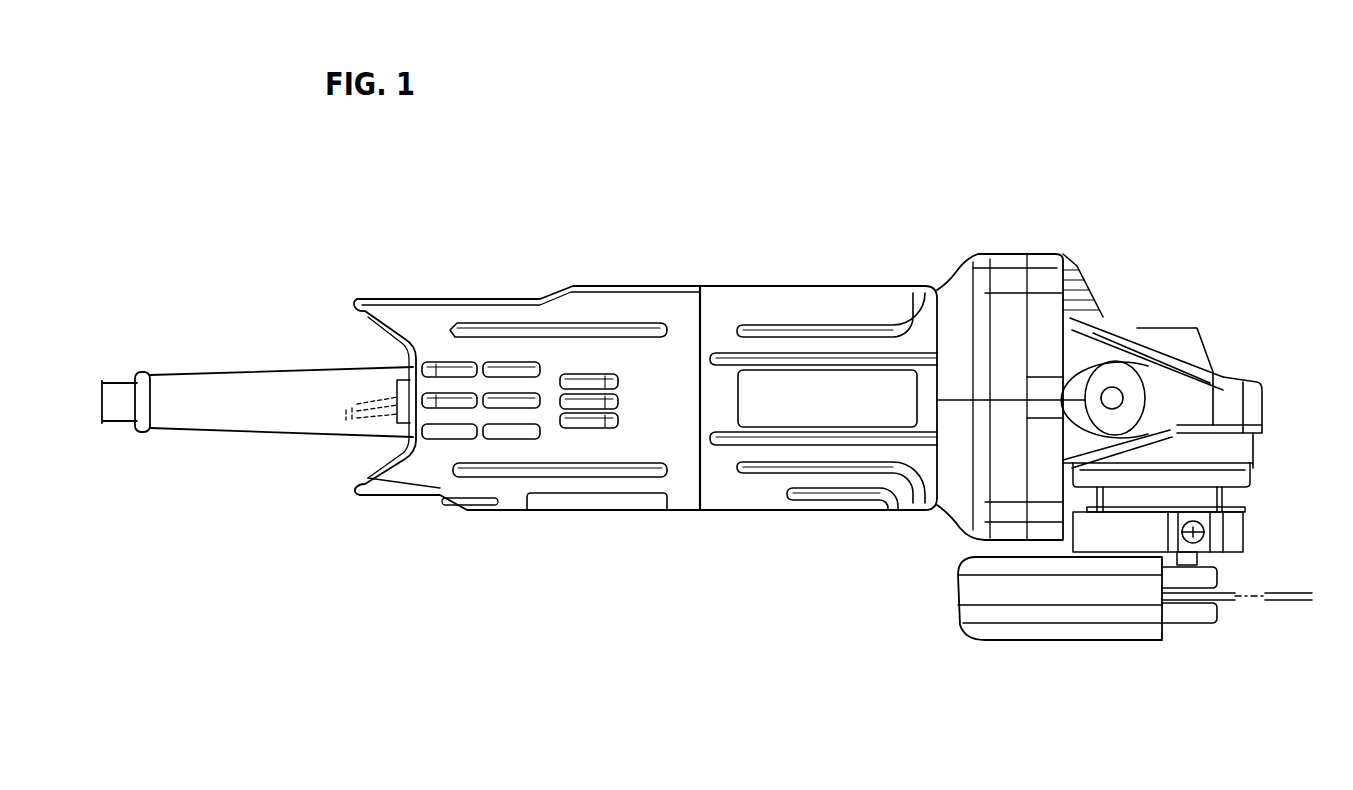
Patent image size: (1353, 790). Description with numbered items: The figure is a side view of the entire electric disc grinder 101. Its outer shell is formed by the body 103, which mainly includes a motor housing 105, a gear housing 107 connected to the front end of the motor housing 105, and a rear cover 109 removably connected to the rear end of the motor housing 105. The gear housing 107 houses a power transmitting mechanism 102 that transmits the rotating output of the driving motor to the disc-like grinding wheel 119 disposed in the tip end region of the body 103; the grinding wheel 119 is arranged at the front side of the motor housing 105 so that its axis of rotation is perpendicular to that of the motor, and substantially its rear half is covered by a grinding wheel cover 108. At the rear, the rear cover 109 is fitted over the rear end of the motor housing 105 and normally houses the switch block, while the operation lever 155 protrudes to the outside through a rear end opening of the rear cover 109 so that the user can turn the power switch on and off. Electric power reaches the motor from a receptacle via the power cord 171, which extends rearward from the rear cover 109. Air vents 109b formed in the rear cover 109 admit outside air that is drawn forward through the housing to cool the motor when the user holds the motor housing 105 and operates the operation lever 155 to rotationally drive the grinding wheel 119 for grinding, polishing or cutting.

The electric disc grinder 101 is at (1083, 198).
The power transmitting mechanism 102 is at (747, 503).
The body 103 is at (976, 252).
The motor housing 105 is at (763, 286).
The gear housing 107 is at (1130, 320).
The grinding wheel cover 108 is at (1037, 641).
The rear cover 109 is at (500, 297).
The air vents 109b is at (437, 433).
The grinding wheel 119 is at (1263, 602).
The operation lever 155 is at (352, 423).
The power cord 171 is at (114, 390).